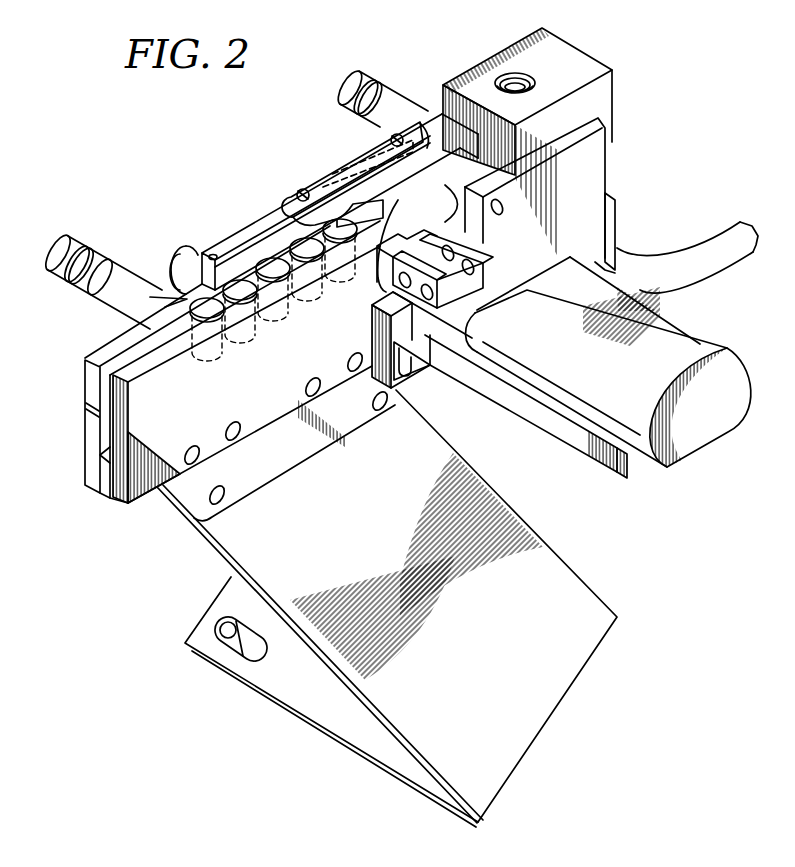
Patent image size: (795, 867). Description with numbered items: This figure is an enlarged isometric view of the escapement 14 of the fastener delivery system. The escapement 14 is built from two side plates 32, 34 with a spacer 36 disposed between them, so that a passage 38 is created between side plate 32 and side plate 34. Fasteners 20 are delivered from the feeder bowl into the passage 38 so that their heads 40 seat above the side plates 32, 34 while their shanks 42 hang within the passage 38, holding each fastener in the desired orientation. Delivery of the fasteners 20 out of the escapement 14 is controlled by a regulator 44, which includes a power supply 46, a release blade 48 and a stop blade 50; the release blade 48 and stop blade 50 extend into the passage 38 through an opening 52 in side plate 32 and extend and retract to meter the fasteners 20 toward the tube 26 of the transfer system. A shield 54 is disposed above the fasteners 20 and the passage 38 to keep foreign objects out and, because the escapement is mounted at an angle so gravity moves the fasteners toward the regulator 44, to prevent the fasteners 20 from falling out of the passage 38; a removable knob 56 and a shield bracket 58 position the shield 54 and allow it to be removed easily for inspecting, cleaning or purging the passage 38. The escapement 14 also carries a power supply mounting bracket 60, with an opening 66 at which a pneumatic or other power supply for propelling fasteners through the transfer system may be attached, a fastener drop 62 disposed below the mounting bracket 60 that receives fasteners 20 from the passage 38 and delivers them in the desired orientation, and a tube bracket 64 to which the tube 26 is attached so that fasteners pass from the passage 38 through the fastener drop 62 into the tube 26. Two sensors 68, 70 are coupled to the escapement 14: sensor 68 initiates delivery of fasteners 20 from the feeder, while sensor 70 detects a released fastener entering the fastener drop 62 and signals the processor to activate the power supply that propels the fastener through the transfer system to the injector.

The escapement 14 is at (252, 142).
The fasteners 20 is at (282, 235).
The tube 26 is at (739, 268).
The side plate 32 is at (216, 447).
The side plate 34 is at (100, 355).
The spacer 36 is at (104, 494).
The passage 38 is at (100, 434).
The heads 40 is at (322, 284).
The shanks 42 is at (279, 324).
The regulator 44 is at (656, 489).
The power supply 46 is at (680, 455).
The release blade 48 is at (470, 253).
The stop blade 50 is at (432, 346).
The opening 52 is at (421, 216).
The shield 54 is at (330, 172).
The removable knob 56 is at (183, 265).
The shield bracket 58 is at (222, 248).
The power supply mounting bracket 60 is at (561, 48).
The fastener drop 62 is at (594, 172).
The tube bracket 64 is at (612, 229).
The opening 66 is at (514, 80).
The sensor 68 is at (68, 245).
The sensor 70 is at (357, 75).